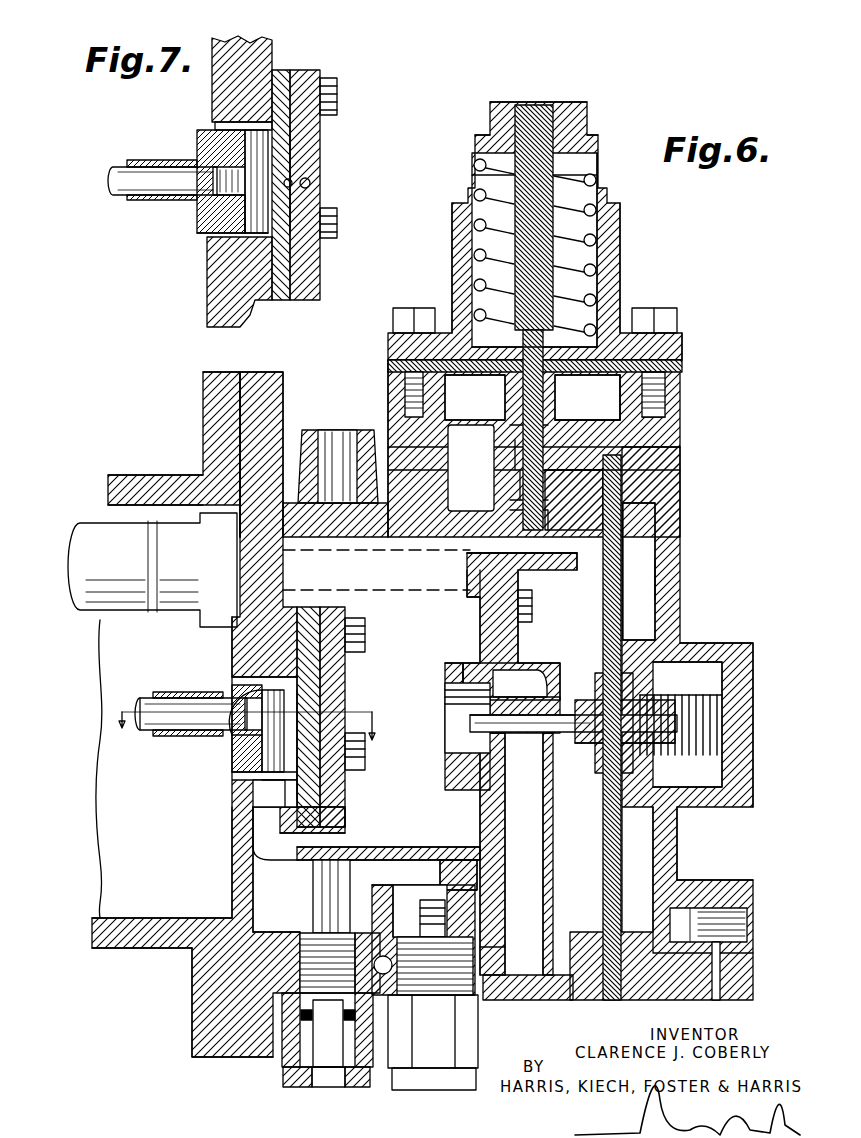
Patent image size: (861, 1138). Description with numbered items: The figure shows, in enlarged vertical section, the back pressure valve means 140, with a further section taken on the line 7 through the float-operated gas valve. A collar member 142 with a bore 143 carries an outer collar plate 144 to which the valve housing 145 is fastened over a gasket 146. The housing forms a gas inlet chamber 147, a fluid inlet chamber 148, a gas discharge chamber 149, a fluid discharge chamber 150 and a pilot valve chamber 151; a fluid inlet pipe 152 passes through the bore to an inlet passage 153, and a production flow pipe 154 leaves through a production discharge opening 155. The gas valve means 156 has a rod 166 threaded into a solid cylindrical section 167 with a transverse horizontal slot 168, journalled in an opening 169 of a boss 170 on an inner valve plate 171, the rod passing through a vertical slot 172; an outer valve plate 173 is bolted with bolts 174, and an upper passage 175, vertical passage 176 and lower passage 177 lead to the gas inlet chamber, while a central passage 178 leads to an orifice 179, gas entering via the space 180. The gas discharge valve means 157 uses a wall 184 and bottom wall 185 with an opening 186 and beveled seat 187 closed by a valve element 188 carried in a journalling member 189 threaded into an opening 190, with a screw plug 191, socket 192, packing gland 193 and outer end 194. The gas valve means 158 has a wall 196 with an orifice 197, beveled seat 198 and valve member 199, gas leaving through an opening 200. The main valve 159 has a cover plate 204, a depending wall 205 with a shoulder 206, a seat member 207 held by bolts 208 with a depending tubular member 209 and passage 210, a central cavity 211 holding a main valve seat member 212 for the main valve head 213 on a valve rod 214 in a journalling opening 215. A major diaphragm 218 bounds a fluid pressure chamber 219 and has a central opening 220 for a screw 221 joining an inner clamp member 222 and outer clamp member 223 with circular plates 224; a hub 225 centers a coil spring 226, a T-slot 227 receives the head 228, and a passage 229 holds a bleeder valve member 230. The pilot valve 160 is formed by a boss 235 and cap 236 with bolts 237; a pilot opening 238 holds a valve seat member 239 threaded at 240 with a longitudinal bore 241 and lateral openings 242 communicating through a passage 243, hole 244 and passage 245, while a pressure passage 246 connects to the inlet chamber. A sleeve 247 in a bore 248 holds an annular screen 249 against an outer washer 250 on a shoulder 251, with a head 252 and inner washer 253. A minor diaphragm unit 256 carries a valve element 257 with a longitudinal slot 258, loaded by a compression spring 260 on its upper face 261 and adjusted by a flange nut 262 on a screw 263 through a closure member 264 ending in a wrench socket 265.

In FIG. 6, the back pressure valve means 140 is at (725, 343).
In FIG. 6, the collar member 142 is at (95, 930).
In FIG. 6, the bore 143 is at (125, 920).
In FIG. 6, the outer collar plate 144 is at (203, 455).
In FIG. 7, the valve housing 145 is at (240, 55).
In FIG. 6, the valve housing 145 is at (207, 385).
In FIG. 6, the gasket 146 is at (215, 428).
In FIG. 6, the gas inlet chamber 147 is at (262, 852).
In FIG. 6, the fluid inlet chamber 148 is at (640, 597).
In FIG. 6, the gas discharge chamber 149 is at (490, 948).
In FIG. 6, the fluid discharge chamber 150 is at (283, 620).
In FIG. 6, the pilot valve chamber 151 is at (670, 340).
In FIG. 6, the fluid inlet pipe 152 is at (110, 548).
In FIG. 6, the inlet passage 153 is at (370, 598).
In FIG. 6, the production flow pipe 154 is at (305, 430).
In FIG. 6, the production discharge opening 155 is at (376, 569).
In FIG. 6, the gas valve means 156 is at (225, 755).
In FIG. 6, the gas discharge valve means 157 is at (318, 902).
In FIG. 6, the gas valve means 158 is at (432, 1050).
In FIG. 6, the main valve 159 is at (622, 616).
In FIG. 6, the pilot valve 160 is at (590, 285).
In FIG. 7, the rod 166 is at (140, 180).
In FIG. 6, the rod 166 is at (150, 733).
In FIG. 7, the solid cylindrical section 167 is at (228, 205).
In FIG. 6, the solid cylindrical section 167 is at (232, 745).
In FIG. 7, the transverse horizontal slot 168 is at (245, 225).
In FIG. 6, the transverse horizontal slot 168 is at (250, 762).
In FIG. 6, the opening 169 is at (237, 690).
In FIG. 7, the boss 170 is at (240, 230).
In FIG. 6, the boss 170 is at (275, 772).
In FIG. 7, the inner valve plate 171 is at (283, 85).
In FIG. 6, the inner valve plate 171 is at (305, 625).
In FIG. 7, the vertical slot 172 is at (200, 170).
In FIG. 6, the vertical slot 172 is at (245, 710).
In FIG. 7, the outer valve plate 173 is at (305, 80).
In FIG. 6, the outer valve plate 173 is at (345, 668).
In FIG. 7, the bolts 174 is at (337, 97).
In FIG. 6, the bolts 174 is at (365, 635).
In FIG. 6, the upper passage 175 is at (250, 672).
In FIG. 7, the vertical passage 176 is at (312, 183).
In FIG. 6, the vertical passage 176 is at (330, 700).
In FIG. 6, the lower passage 177 is at (318, 808).
In FIG. 7, the central passage 178 is at (300, 150).
In FIG. 6, the central passage 178 is at (260, 795).
In FIG. 6, the orifice 179 is at (265, 805).
In FIG. 7, the space 180 is at (225, 125).
In FIG. 6, the wall 184 is at (428, 860).
In FIG. 6, the bottom wall 185 is at (262, 962).
In FIG. 6, the opening 186 is at (330, 832).
In FIG. 6, the beveled seat 187 is at (330, 850).
In FIG. 6, the valve element 188 is at (315, 882).
In FIG. 6, the journalling member 189 is at (302, 935).
In FIG. 6, the opening 190 is at (245, 925).
In FIG. 6, the screw plug 191 is at (290, 1050).
In FIG. 6, the socket 192 is at (300, 1082).
In FIG. 6, the packing gland 193 is at (293, 1012).
In FIG. 6, the outer end 194 is at (335, 1082).
In FIG. 6, the wall 196 is at (410, 890).
In FIG. 6, the orifice 197 is at (440, 885).
In FIG. 6, the beveled seat 198 is at (430, 895).
In FIG. 6, the valve member 199 is at (420, 921).
In FIG. 6, the opening 200 is at (382, 972).
In FIG. 6, the cover plate 204 is at (665, 842).
In FIG. 6, the depending wall 205 is at (465, 569).
In FIG. 6, the shoulder 206 is at (465, 587).
In FIG. 6, the seat member 207 is at (518, 630).
In FIG. 6, the bolts 208 is at (520, 607).
In FIG. 6, the depending tubular member 209 is at (520, 855).
In FIG. 6, the passage 210 is at (520, 918).
In FIG. 6, the central cavity 211 is at (505, 668).
In FIG. 6, the main valve seat member 212 is at (452, 663).
In FIG. 6, the main valve head 213 is at (445, 715).
In FIG. 6, the valve rod 214 is at (462, 725).
In FIG. 6, the journalling opening 215 is at (500, 755).
In FIG. 6, the major diaphragm 218 is at (665, 880).
In FIG. 6, the fluid pressure chamber 219 is at (640, 552).
In FIG. 6, the central opening 220 is at (600, 700).
In FIG. 6, the screw 221 is at (655, 695).
In FIG. 6, the inner clamp member 222 is at (595, 680).
In FIG. 6, the outer clamp member 223 is at (690, 642).
In FIG. 6, the circular plates 224 is at (640, 577).
In FIG. 6, the hub 225 is at (660, 755).
In FIG. 6, the coil spring 226 is at (725, 690).
In FIG. 6, the T-slot 227 is at (522, 717).
In FIG. 6, the head 228 is at (590, 750).
In FIG. 6, the passage 229 is at (720, 948).
In FIG. 6, the bleeder valve member 230 is at (745, 892).
In FIG. 6, the boss 235 is at (400, 420).
In FIG. 6, the cap 236 is at (450, 245).
In FIG. 6, the bolts 237 is at (398, 333).
In FIG. 6, the pilot opening 238 is at (470, 548).
In FIG. 6, the valve seat member 239 is at (530, 500).
In FIG. 6, the threaded portion 240 is at (515, 455).
In FIG. 6, the longitudinal bore 241 is at (520, 470).
In FIG. 6, the lateral openings 242 is at (640, 430).
In FIG. 6, the passage 243 is at (600, 442).
In FIG. 6, the hole 244 is at (682, 466).
In FIG. 6, the passage 245 is at (670, 500).
In FIG. 6, the pressure passage 246 is at (680, 402).
In FIG. 6, the sleeve 247 is at (688, 366).
In FIG. 6, the bore 248 is at (665, 395).
In FIG. 6, the annular screen 249 is at (395, 372).
In FIG. 6, the outer washer 250 is at (400, 402).
In FIG. 6, the shoulder 251 is at (400, 387).
In FIG. 6, the head 252 is at (505, 408).
In FIG. 6, the inner washer 253 is at (510, 440).
In FIG. 6, the minor diaphragm unit 256 is at (612, 320).
In FIG. 6, the valve element 257 is at (600, 410).
In FIG. 6, the longitudinal slot 258 is at (525, 485).
In FIG. 6, the compression spring 260 is at (600, 243).
In FIG. 6, the upper face 261 is at (480, 345).
In FIG. 6, the flange nut 262 is at (600, 178).
In FIG. 6, the screw 263 is at (560, 236).
In FIG. 6, the closure member 264 is at (585, 160).
In FIG. 6, the wrench socket 265 is at (535, 108).
In FIG. 6, the section line 7 is at (244, 726).